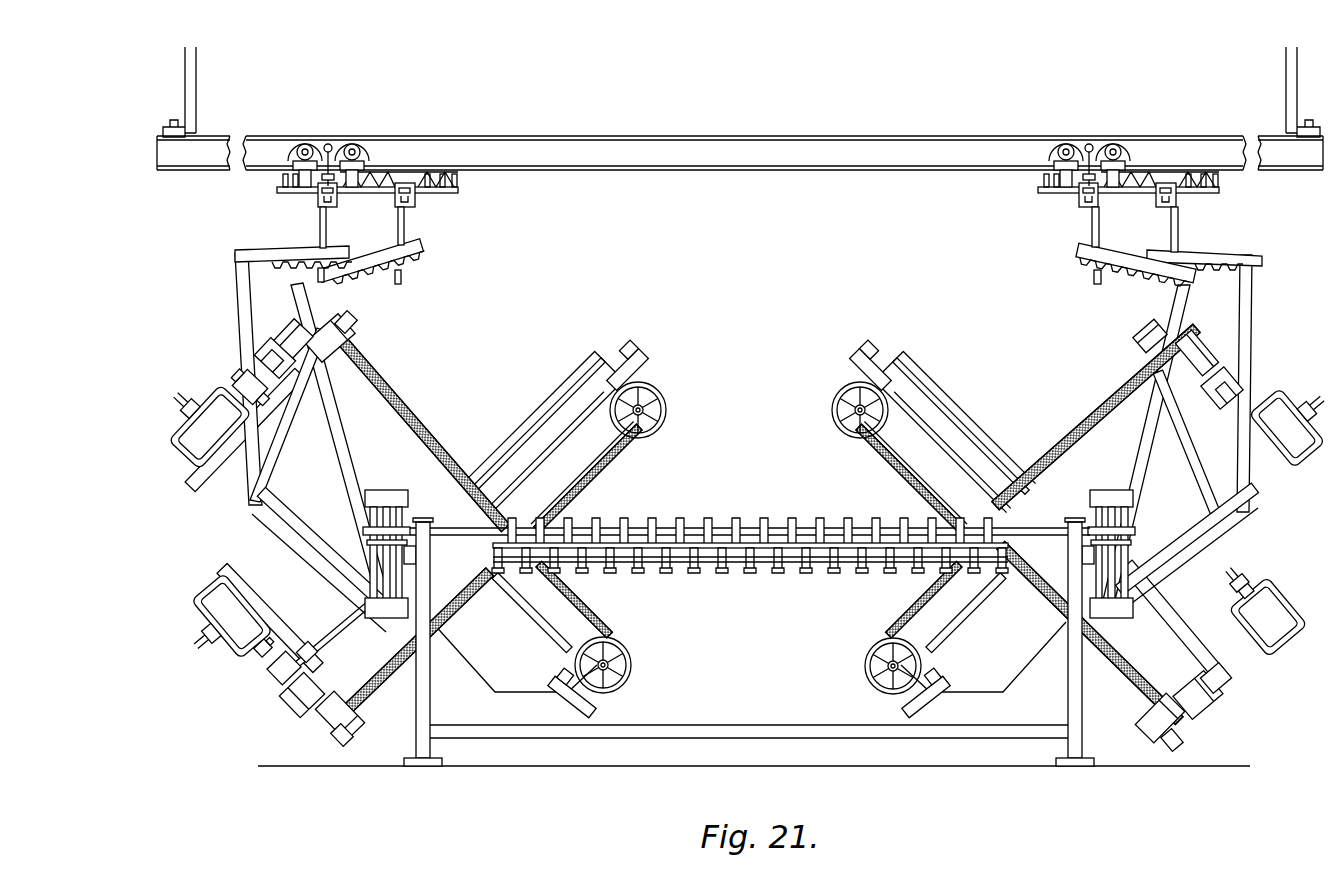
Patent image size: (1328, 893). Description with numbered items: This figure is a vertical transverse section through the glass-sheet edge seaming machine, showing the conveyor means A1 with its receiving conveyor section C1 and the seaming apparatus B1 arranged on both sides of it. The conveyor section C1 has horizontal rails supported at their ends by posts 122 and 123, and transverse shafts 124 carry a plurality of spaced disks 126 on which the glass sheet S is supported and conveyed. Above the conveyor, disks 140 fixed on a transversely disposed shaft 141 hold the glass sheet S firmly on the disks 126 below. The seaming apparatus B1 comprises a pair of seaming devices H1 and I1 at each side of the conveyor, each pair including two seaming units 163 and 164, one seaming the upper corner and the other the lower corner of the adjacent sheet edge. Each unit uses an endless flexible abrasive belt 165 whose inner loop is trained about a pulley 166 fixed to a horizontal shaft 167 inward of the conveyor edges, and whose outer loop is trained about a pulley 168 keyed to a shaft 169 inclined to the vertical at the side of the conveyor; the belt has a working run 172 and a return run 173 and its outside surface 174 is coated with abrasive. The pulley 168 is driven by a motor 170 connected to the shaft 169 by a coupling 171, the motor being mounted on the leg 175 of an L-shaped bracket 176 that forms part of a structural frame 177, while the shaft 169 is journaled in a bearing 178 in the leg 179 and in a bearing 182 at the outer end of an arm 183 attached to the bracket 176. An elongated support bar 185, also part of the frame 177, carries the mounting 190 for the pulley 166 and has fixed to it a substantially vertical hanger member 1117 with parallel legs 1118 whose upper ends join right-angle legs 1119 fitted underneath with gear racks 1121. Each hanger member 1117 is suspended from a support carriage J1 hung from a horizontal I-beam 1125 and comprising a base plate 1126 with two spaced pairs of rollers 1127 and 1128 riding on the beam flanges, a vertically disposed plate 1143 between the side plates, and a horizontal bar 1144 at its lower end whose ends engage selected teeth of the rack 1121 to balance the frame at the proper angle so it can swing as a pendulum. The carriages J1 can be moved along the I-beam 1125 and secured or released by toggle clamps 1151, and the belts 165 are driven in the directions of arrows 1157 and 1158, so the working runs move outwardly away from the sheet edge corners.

The I-beam 1125 is at (722, 150).
The roller 1127 is at (305, 144).
The roller 1128 is at (356, 146).
The toggle clamp 1151 is at (328, 143).
The base plate 1126 is at (302, 193).
The vertically disposed plate 1143 is at (396, 224).
The leg 1119 is at (268, 252).
The gear rack 1121 is at (306, 262).
The horizontal bar 1144 is at (322, 282).
The hanger member 1117 is at (234, 276).
The leg 1118 is at (238, 302).
The pulley 168 is at (309, 343).
The shaft 169 is at (298, 356).
The bearing 182 is at (350, 331).
The arm 183 is at (354, 352).
The leg 179 is at (258, 372).
The bearing 178 is at (258, 382).
The motor 170 is at (200, 432).
The coupling 171 is at (260, 649).
The leg 175 is at (236, 470).
The L-shaped bracket 176 is at (272, 424).
The abrasive belt 165 is at (421, 426).
The outside surface 174 is at (432, 449).
The structural frame 177 is at (345, 443).
The support bar 185 is at (322, 542).
The return run 173 is at (396, 442).
The working run 172 is at (473, 482).
The seaming unit 163 is at (640, 458).
The seaming unit 164 is at (595, 600).
The mounting 190 is at (632, 381).
The pulley 166 is at (662, 402).
The shaft 167 is at (660, 411).
The glass sheet S is at (688, 526).
The disk 140 is at (736, 527).
The shaft 141 is at (797, 529).
The disk 126 is at (691, 577).
The shaft 124 is at (766, 577).
The post 123 is at (417, 738).
The post 122 is at (1083, 724).
The arrow 1157 is at (474, 598).
The arrow 1158 is at (396, 372).
The support carriage J1 is at (272, 187).
The seaming device H1 is at (232, 345).
The seaming device I1 is at (518, 407).
The seaming apparatus B1 is at (525, 324).
The conveyor means A1 is at (438, 682).
The receiving conveyor section C1 is at (1063, 702).